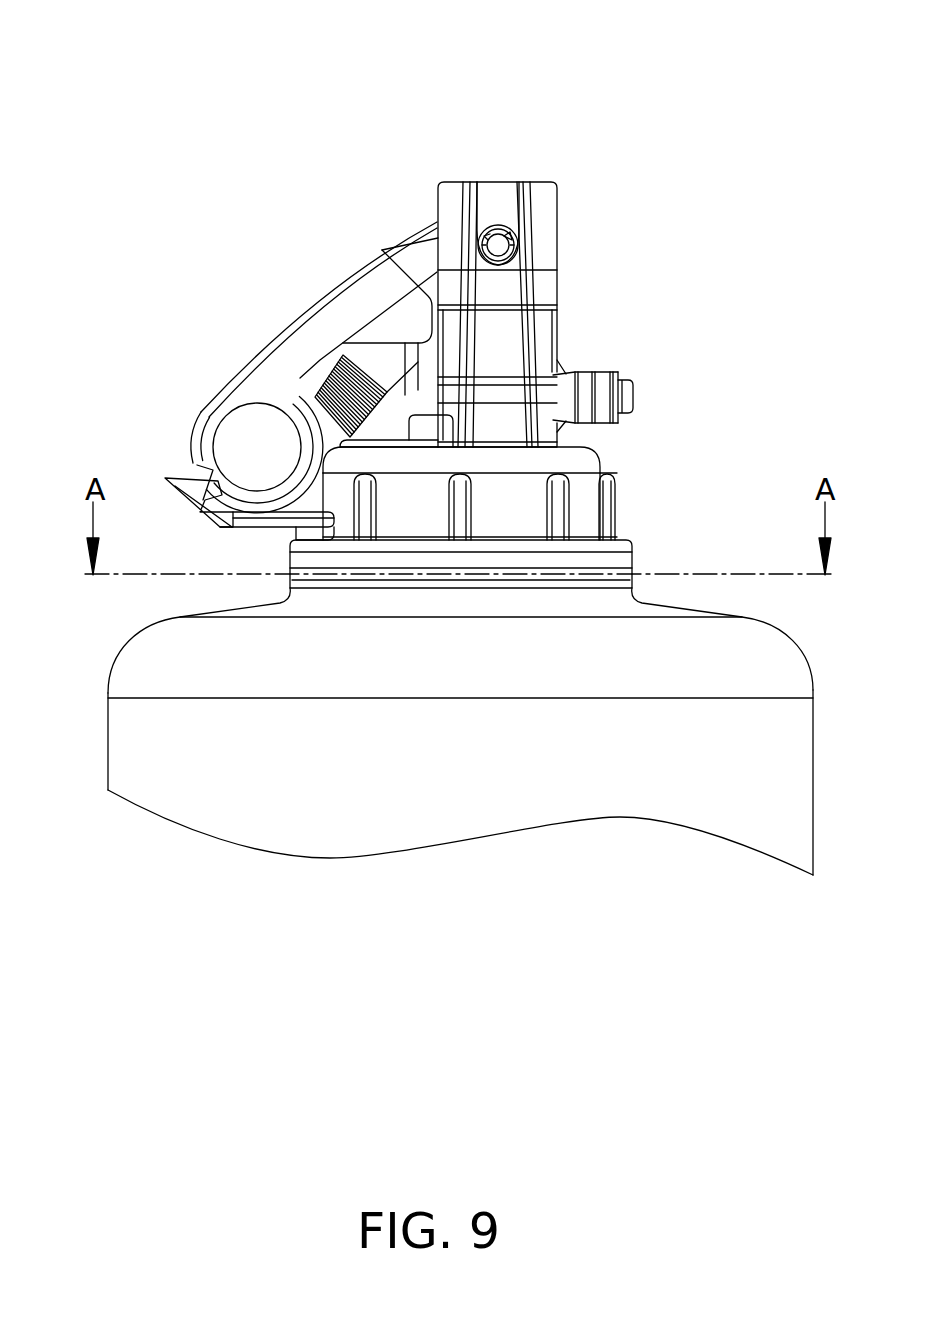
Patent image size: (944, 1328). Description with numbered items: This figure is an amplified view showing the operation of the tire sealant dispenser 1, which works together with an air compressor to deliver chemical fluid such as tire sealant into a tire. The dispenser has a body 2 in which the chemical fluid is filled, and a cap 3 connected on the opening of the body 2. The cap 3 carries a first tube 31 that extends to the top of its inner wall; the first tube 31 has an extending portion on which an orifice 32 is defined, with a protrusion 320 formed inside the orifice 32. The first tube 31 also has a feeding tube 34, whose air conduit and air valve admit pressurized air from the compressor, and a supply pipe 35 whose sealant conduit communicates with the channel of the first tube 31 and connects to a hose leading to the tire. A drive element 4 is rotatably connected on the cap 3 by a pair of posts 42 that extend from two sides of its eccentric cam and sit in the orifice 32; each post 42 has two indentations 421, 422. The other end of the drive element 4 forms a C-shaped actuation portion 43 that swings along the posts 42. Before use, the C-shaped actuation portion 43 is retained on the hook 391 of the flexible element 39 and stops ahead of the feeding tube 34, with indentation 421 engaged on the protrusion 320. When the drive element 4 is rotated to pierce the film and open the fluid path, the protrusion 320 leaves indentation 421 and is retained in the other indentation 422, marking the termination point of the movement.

The tire sealant dispenser 1 is at (132, 78).
The body 2 is at (135, 748).
The cap 3 is at (585, 498).
The first tube 31 is at (560, 333).
The orifice 32 is at (508, 242).
The protrusion 320 is at (480, 240).
The feeding tube 34 is at (305, 372).
The supply pipe 35 is at (618, 397).
The flexible element 39 is at (272, 523).
The hook 391 is at (188, 490).
The drive element 4 is at (302, 342).
The posts 42 is at (503, 247).
The indentation 421 is at (496, 238).
The indentation 422 is at (516, 250).
The C-shaped actuation portion 43 is at (206, 394).